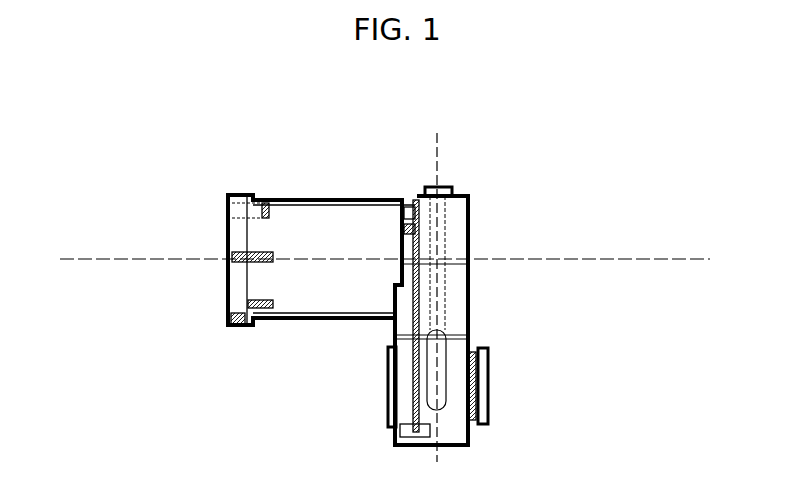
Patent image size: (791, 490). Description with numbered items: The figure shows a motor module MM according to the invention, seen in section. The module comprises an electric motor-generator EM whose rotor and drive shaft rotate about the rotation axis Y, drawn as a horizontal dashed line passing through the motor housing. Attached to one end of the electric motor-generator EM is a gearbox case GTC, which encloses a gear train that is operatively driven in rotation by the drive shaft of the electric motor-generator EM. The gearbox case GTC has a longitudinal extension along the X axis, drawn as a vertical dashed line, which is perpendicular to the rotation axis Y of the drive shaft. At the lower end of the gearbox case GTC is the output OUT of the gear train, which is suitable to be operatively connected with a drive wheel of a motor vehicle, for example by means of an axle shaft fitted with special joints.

The electric motor-generator EM is at (308, 205).
The motor module MM is at (367, 297).
The gearbox case GTC is at (482, 329).
The output of the gear train OUT is at (490, 418).
The X axis X is at (438, 151).
The Y axis Y is at (688, 257).